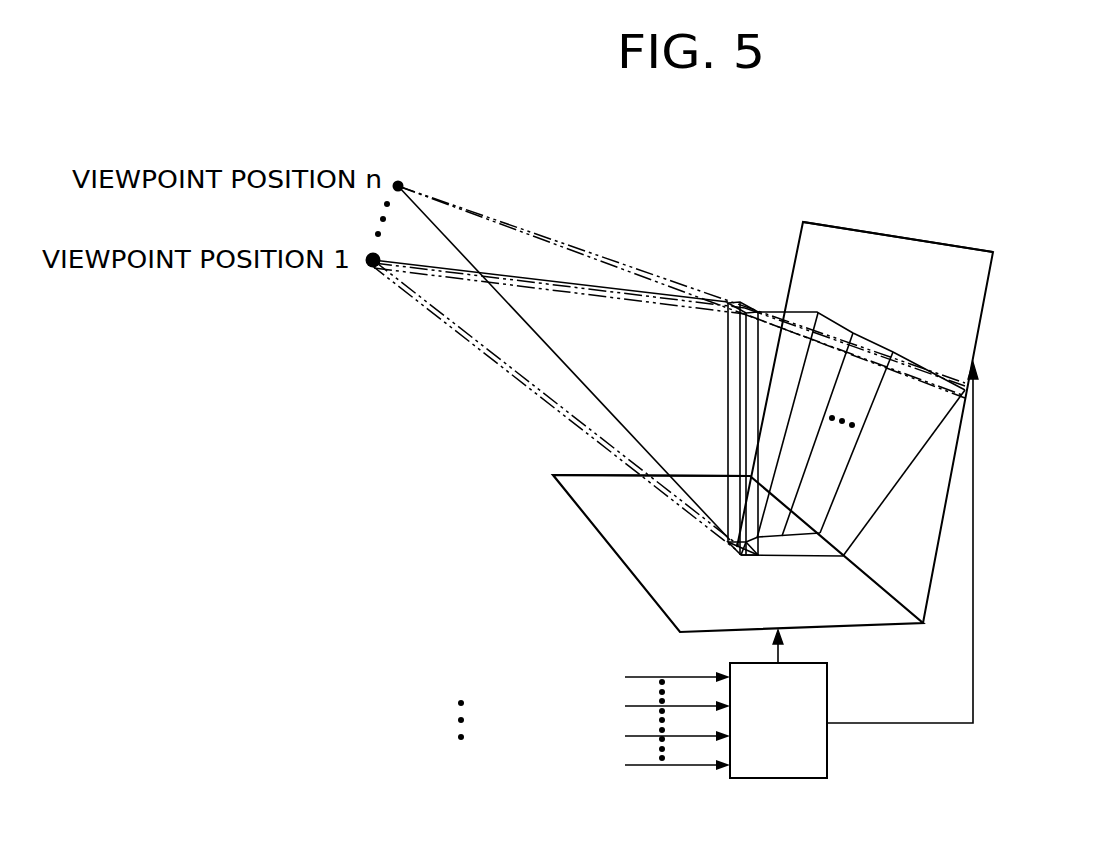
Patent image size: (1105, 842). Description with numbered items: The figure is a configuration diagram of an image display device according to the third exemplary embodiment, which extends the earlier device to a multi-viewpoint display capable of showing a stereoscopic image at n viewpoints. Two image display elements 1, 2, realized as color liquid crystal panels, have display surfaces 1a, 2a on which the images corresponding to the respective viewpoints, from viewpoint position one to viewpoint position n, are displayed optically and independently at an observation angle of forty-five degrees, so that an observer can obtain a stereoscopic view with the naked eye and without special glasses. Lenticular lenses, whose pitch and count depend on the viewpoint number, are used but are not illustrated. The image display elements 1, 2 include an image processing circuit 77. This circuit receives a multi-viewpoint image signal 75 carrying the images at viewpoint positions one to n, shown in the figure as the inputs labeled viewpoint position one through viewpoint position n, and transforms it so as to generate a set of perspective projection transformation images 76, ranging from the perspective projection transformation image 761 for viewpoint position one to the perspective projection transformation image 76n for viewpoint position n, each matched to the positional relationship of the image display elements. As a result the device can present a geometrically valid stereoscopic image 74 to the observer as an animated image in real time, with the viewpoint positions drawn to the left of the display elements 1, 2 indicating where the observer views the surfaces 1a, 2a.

The image display element 1 is at (573, 500).
The display surface 1a is at (638, 533).
The image display element 2 is at (983, 313).
The display surface 2a is at (957, 284).
The geometrically valid stereoscopic image 74 is at (743, 342).
The multi-viewpoint image signal 75 is at (285, 653).
The perspective projection transformation images 76 is at (853, 444).
The perspective projection transformation image 761 is at (800, 348).
The perspective projection transformation image 76n is at (907, 467).
The image processing circuit 77 is at (827, 740).